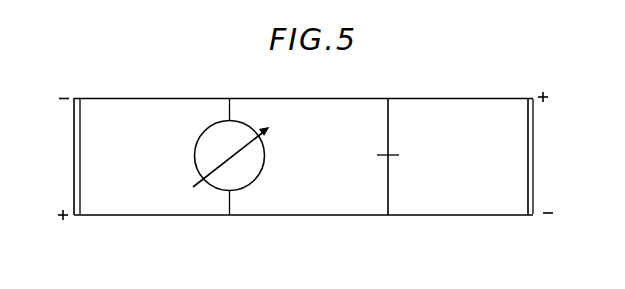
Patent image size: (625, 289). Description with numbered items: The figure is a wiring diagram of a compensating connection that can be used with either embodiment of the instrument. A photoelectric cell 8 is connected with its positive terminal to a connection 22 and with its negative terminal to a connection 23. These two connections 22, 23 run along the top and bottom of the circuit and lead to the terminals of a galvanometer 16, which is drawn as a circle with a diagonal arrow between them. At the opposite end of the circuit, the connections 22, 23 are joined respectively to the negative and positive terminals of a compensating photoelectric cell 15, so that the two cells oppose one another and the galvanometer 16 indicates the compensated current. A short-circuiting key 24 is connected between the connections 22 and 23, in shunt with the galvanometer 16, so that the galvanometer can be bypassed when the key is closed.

The photoelectric cell 8 is at (534, 147).
The compensating photoelectric cell 15 is at (74, 160).
The galvanometer 16 is at (205, 143).
The connection 22 is at (368, 81).
The connection 23 is at (335, 215).
The short-circuiting key 24 is at (388, 155).